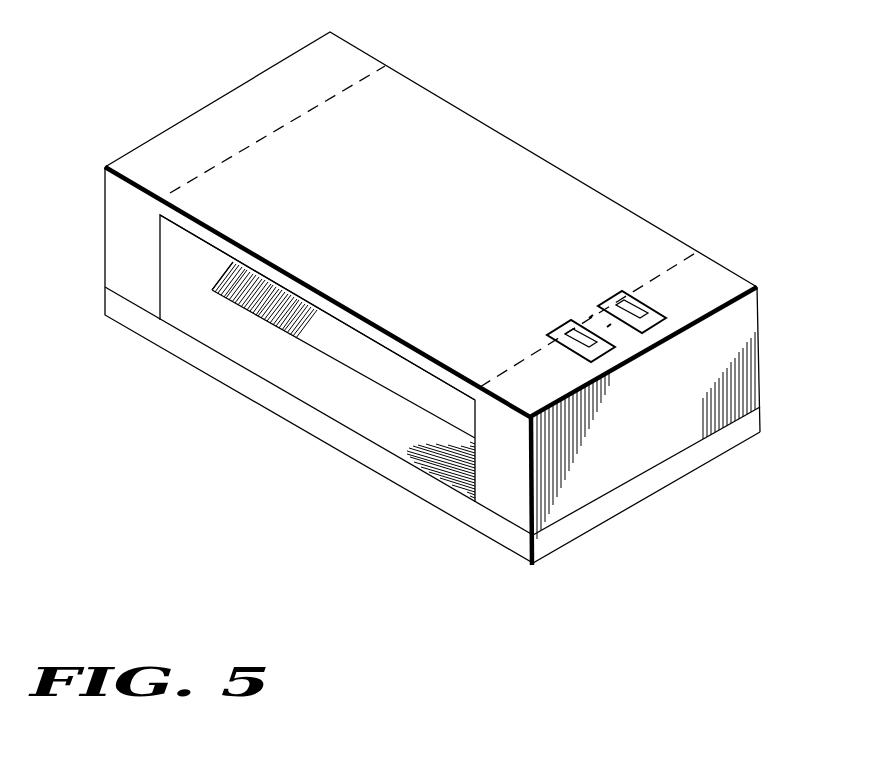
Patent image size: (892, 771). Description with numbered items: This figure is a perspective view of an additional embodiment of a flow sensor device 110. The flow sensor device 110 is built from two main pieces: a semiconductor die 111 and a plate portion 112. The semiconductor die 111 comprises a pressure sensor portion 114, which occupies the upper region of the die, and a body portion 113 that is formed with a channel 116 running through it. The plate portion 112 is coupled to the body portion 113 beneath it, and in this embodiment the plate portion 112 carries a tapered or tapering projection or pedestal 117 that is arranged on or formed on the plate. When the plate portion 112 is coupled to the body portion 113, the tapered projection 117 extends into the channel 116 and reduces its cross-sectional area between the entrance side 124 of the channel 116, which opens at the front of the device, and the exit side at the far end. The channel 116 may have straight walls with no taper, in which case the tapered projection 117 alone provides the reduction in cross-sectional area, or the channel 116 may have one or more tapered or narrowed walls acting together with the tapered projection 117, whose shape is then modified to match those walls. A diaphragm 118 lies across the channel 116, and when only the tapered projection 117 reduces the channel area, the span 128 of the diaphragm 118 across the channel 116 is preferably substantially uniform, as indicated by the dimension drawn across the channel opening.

The flow sensor device 110 is at (133, 563).
The semiconductor die 111 is at (718, 277).
The plate portion 112 is at (587, 517).
The body portion 113 is at (660, 438).
The pressure sensor portion 114 is at (352, 62).
The channel 116 is at (310, 368).
The tapered projection 117 is at (393, 380).
The diaphragm 118 is at (287, 282).
The entrance side 124 is at (160, 247).
The span 128 is at (160, 320).